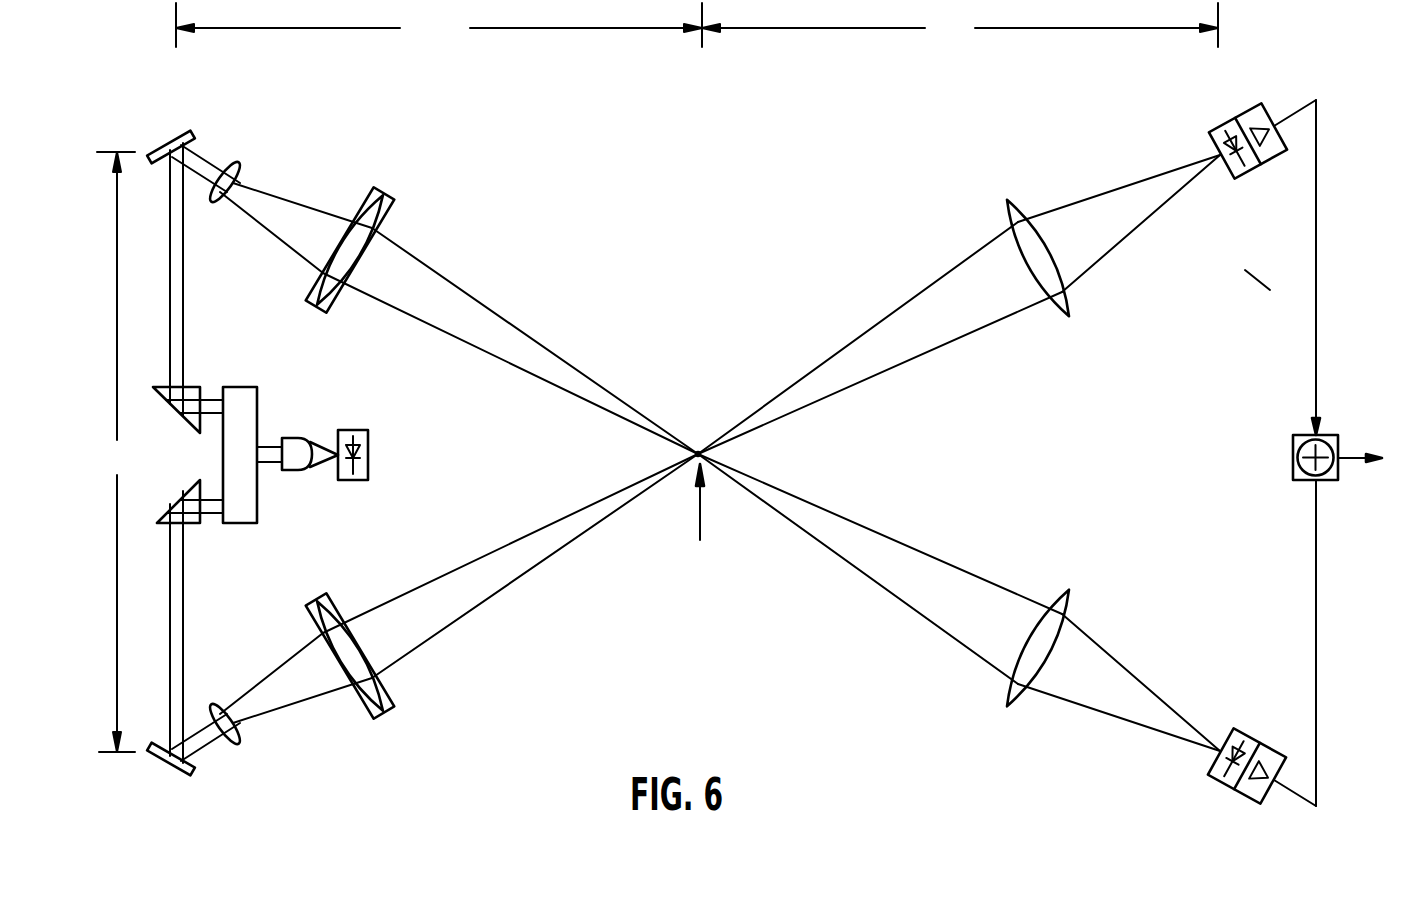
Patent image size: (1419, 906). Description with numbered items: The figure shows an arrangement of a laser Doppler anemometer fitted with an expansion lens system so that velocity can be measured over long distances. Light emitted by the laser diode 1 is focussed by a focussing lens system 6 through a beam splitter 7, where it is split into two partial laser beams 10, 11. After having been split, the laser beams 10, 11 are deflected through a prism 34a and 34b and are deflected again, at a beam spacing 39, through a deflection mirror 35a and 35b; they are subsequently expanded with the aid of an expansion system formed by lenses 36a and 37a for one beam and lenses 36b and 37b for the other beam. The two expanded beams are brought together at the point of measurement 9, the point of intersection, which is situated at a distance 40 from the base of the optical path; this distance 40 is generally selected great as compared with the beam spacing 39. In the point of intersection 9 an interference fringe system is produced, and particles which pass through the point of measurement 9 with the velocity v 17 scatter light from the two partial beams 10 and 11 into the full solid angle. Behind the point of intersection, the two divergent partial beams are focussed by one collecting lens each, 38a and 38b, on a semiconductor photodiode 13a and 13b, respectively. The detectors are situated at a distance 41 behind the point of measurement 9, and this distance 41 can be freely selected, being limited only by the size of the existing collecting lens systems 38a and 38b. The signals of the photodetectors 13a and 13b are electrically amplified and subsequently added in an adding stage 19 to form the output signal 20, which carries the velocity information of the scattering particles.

The laser diode 1 is at (352, 430).
The focussing lens system 6 is at (293, 440).
The beam splitter 7 is at (243, 388).
The point of measurement 9 is at (698, 450).
The laser beam 10 is at (610, 397).
The laser beam 11 is at (613, 513).
The semiconductor photodiode 13a is at (1213, 783).
The semiconductor photodiode 13b is at (1213, 127).
The velocity v 17 is at (704, 524).
The adding stage 19 is at (1293, 440).
The signal 20 is at (1377, 460).
The prism 34a is at (190, 387).
The prism 34b is at (190, 523).
The deflection mirror 35a is at (175, 142).
The deflection mirror 35b is at (177, 770).
The expansion system lens 36a is at (237, 163).
The expansion system lens 36b is at (240, 745).
The expansion system lens 37a is at (385, 202).
The expansion system lens 37b is at (385, 705).
The collecting lens 38a is at (1010, 703).
The collecting lens 38b is at (1008, 203).
The beam spacing 39 is at (116, 452).
The distance to point of measurement 40 is at (439, 25).
The detector distance 41 is at (960, 25).